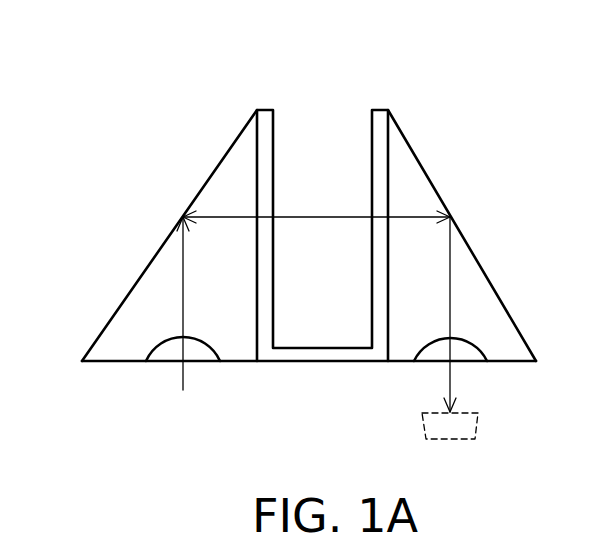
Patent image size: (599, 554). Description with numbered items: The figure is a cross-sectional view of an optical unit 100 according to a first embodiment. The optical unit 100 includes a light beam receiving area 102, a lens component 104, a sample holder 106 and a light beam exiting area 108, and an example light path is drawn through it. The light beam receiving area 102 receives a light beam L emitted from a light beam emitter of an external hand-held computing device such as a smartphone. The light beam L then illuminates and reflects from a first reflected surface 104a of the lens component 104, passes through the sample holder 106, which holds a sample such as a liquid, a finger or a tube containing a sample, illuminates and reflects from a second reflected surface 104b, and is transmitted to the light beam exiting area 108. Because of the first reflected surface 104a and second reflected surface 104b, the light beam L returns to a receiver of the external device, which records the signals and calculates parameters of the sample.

The optical unit 100 is at (305, 230).
The light beam receiving area 102 is at (168, 365).
The lens component 104 is at (305, 235).
The first reflected surface 104a is at (205, 187).
The second reflected surface 104b is at (483, 268).
The sample holder 106 is at (267, 110).
The light beam exiting area 108 is at (475, 365).
The light beam L is at (182, 260).